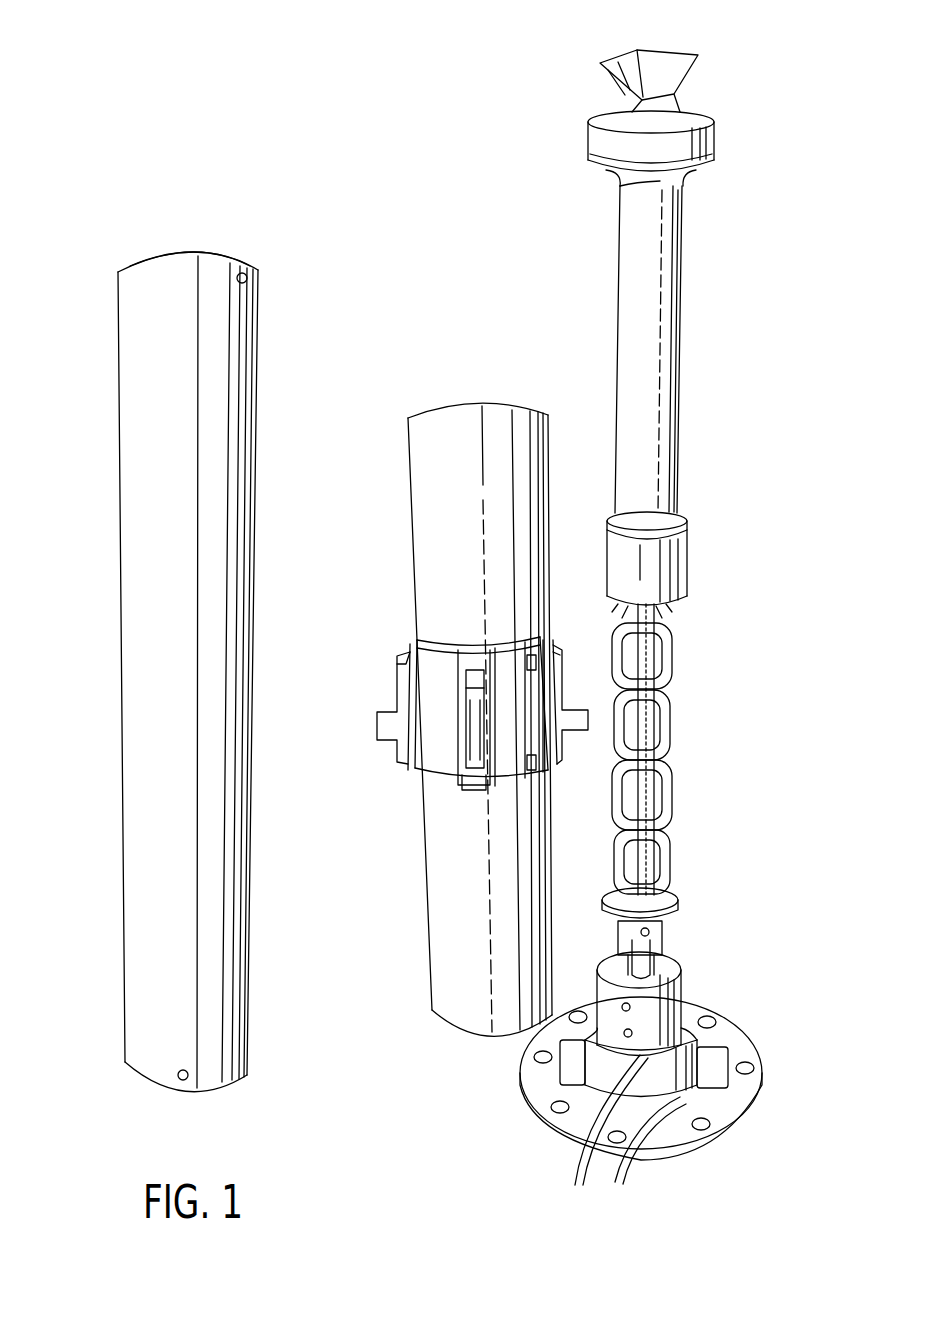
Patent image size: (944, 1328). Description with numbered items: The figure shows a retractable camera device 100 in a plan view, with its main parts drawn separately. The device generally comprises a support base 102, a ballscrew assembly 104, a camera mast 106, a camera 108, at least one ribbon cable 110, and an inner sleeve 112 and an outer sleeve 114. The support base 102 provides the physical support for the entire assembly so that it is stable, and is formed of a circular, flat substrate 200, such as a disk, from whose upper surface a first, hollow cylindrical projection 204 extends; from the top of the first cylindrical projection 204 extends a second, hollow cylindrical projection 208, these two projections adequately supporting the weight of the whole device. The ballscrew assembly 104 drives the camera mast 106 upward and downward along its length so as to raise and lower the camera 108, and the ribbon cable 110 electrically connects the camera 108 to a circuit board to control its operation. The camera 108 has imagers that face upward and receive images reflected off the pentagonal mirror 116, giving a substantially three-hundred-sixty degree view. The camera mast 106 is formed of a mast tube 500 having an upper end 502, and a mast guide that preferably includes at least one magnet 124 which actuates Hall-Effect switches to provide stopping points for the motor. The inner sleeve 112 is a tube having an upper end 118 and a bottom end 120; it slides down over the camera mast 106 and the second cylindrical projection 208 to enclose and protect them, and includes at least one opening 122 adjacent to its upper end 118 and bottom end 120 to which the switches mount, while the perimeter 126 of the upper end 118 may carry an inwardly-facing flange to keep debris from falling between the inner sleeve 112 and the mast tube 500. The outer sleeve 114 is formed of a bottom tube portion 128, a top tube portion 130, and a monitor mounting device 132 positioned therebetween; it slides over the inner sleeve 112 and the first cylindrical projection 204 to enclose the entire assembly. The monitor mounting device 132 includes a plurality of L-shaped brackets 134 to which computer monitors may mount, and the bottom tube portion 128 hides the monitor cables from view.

The retractable camera device 100 is at (530, 117).
The support base 102 is at (735, 1037).
The ballscrew assembly 104 is at (664, 880).
The camera mast 106 is at (692, 437).
The camera 108 is at (690, 110).
The ribbon cable 110 is at (663, 720).
The inner sleeve 112 is at (115, 721).
The outer sleeve 114 is at (402, 450).
The pentagonal mirror 116 is at (638, 50).
The upper end 118 is at (138, 282).
The bottom end 120 is at (120, 1050).
The opening 122 is at (246, 271).
The magnet 124 is at (668, 572).
The perimeter 126 is at (140, 256).
The bottom tube portion 128 is at (450, 984).
The top tube portion 130 is at (442, 519).
The monitor mounting device 132 is at (433, 748).
The L-shaped brackets 134 is at (400, 680).
The circular substrate 200 is at (733, 1117).
The first cylindrical projection 204 is at (703, 1012).
The second cylindrical projection 208 is at (663, 965).
The mast tube 500 is at (672, 258).
The upper end 502 is at (696, 215).